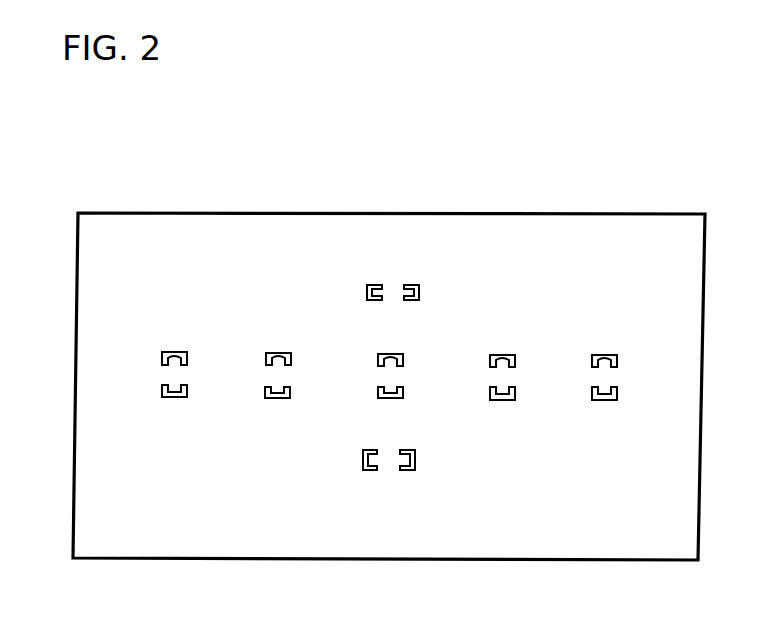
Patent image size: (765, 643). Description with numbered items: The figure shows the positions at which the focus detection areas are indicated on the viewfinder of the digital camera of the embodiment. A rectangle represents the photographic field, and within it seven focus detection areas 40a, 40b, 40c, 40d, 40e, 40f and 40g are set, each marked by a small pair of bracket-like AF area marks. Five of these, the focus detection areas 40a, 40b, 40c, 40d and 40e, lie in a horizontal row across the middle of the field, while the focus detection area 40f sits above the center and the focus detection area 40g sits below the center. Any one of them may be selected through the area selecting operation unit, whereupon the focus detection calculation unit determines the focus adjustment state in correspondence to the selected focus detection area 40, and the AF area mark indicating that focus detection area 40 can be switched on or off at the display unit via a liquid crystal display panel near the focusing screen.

The focus detection area 40 is at (419, 238).
The focus detection area 40a is at (182, 351).
The focus detection area 40b is at (283, 352).
The focus detection area 40c is at (397, 352).
The focus detection area 40d is at (507, 354).
The focus detection area 40e is at (607, 353).
The focus detection area 40f is at (345, 258).
The focus detection area 40g is at (387, 462).